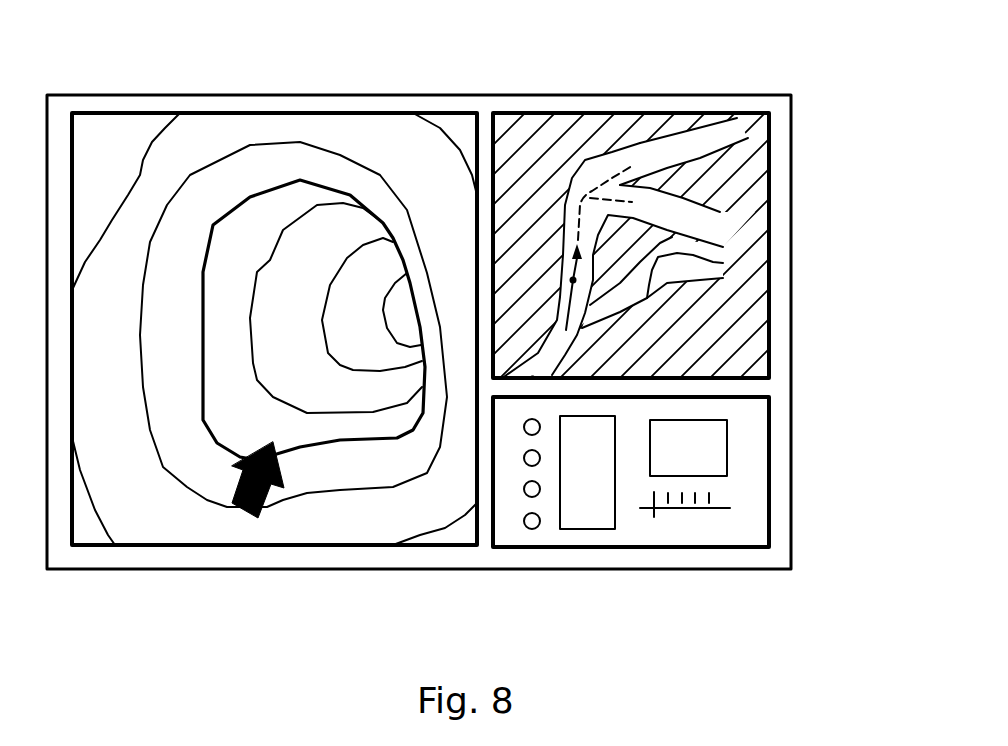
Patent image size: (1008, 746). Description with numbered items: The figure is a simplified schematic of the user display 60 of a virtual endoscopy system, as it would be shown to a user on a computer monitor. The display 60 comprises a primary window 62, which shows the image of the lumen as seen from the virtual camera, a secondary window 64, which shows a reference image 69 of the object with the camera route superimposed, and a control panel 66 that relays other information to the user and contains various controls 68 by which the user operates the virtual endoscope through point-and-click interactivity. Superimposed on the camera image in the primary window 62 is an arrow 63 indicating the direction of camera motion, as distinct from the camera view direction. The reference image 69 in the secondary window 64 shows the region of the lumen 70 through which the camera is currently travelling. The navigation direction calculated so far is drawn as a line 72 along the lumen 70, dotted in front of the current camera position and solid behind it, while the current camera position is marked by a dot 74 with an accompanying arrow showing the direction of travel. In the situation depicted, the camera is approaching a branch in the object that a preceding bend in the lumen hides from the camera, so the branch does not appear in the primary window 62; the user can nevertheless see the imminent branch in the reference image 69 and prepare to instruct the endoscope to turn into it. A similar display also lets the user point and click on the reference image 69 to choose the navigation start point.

The display 60 is at (718, 63).
The primary window 62 is at (95, 570).
The arrow 63 is at (219, 540).
The secondary window 64 is at (749, 218).
The control panel 66 is at (687, 517).
The controls 68 is at (654, 517).
The reference image 69 is at (749, 168).
The lumen 70 is at (731, 293).
The line 72 is at (597, 182).
The dot 74 is at (723, 328).